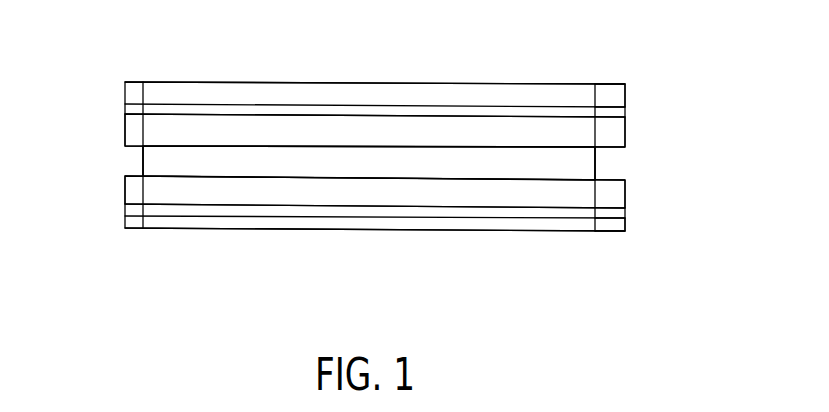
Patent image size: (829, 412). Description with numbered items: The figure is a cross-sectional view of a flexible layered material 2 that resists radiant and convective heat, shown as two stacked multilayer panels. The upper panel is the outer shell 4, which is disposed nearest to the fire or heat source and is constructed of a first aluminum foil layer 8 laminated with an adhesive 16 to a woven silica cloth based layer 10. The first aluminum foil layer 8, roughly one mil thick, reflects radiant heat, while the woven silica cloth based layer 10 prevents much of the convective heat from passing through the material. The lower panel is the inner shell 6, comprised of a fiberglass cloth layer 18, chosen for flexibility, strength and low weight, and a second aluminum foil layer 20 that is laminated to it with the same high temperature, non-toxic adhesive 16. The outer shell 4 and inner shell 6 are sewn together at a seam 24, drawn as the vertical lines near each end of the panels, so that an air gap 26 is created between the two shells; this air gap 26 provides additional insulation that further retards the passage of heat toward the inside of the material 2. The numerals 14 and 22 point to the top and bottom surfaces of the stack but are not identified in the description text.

The layered material 2 is at (369, 194).
The outer shell 4 is at (112, 109).
The inner shell 6 is at (113, 211).
The first aluminum foil layer 8 is at (608, 97).
The woven silica cloth based layer 10 is at (607, 134).
The top layer of first panel 14 is at (495, 82).
The adhesive 16 is at (195, 110).
The fiberglass cloth layer 18 is at (608, 195).
The second aluminum foil layer 20 is at (612, 226).
The bottom layer of second panel 22 is at (433, 235).
The seam 24 is at (140, 160).
The air gap 26 is at (285, 159).